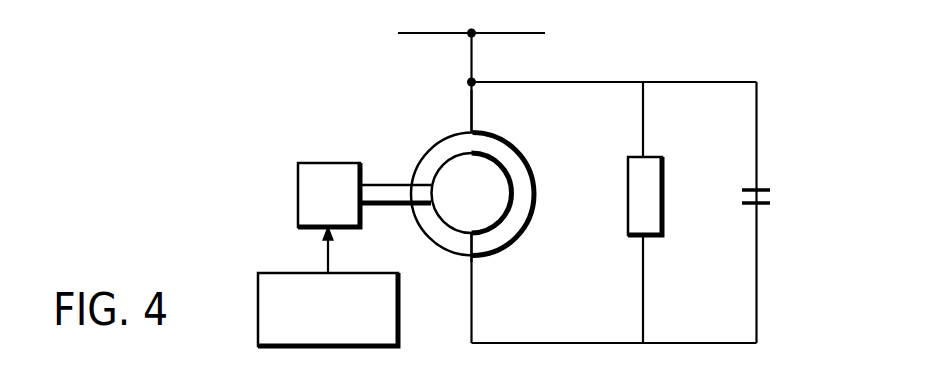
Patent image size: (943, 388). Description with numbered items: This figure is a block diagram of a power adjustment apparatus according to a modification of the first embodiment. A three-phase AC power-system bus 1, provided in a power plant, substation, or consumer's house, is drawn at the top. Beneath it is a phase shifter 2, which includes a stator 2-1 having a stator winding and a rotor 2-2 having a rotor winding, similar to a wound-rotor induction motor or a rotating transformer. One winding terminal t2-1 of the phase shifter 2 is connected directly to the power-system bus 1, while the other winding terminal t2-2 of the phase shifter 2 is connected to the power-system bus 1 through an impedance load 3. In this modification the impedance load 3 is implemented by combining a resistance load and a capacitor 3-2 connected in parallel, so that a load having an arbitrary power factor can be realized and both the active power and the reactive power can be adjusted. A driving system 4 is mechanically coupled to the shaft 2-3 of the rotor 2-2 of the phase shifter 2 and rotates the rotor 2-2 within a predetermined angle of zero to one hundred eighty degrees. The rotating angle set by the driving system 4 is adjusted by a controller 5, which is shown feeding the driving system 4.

The power-system bus 1 is at (523, 33).
The phase shifter 2 is at (478, 198).
The stator 2-1 is at (530, 148).
The rotor 2-2 is at (488, 212).
The shaft 2-3 is at (388, 184).
The winding terminal t2-1 is at (474, 110).
The winding terminal t2-2 is at (475, 247).
The impedance load 3 is at (663, 193).
The capacitor 3-2 is at (768, 189).
The driving system 4 is at (314, 163).
The controller 5 is at (270, 273).